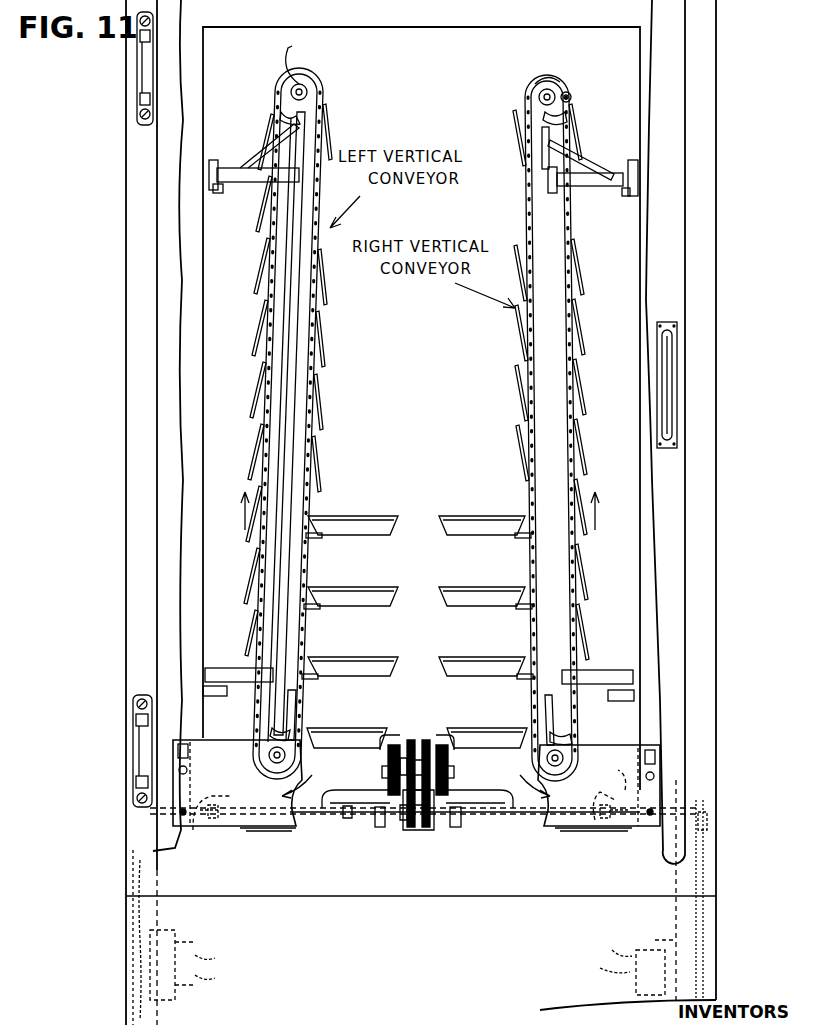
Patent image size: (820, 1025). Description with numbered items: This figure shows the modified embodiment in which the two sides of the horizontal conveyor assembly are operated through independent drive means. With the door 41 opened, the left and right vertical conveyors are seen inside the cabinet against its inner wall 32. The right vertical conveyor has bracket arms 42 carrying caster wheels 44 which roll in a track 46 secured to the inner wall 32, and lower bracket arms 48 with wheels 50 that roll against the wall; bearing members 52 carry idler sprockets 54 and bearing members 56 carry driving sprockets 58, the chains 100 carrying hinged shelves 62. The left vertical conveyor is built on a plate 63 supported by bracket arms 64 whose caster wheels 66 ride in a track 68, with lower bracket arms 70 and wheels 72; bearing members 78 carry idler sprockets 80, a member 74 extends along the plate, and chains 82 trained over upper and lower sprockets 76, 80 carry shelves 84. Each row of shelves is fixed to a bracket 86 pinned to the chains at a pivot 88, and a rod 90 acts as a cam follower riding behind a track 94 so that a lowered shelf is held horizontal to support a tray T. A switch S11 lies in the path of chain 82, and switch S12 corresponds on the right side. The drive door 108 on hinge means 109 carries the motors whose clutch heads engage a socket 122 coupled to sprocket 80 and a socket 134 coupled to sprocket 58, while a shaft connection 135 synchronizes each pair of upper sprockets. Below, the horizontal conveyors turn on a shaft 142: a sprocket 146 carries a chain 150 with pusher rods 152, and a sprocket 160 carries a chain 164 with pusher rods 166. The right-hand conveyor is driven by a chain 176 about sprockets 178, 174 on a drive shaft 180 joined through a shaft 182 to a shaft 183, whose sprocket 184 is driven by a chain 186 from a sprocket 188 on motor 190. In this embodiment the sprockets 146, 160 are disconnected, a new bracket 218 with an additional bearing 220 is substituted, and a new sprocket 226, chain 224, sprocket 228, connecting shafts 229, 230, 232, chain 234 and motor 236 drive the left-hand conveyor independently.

The inner wall 32 is at (436, 29).
The door 41 is at (160, 168).
The bracket arms 42 is at (626, 172).
The caster wheels 44 is at (634, 162).
The track 46 is at (632, 196).
The bracket arms 48 is at (594, 668).
The wheels 50 is at (603, 701).
The bearing members 52 is at (545, 125).
The idler sprockets 54 is at (576, 122).
The bearing members 56 is at (546, 712).
The driving sprockets 58 is at (572, 742).
The shelves 62 is at (528, 346).
The plate 63 is at (286, 348).
The bracket arms 64 is at (232, 167).
The caster wheels 66 is at (214, 160).
The track 68 is at (219, 193).
The bracket arms 70 is at (240, 668).
The wheels 72 is at (236, 697).
The left conveyor post 74 is at (306, 132).
The upper sprockets 76 is at (282, 116).
The bearing members 78 is at (296, 712).
The idler sprockets 80 is at (270, 734).
The chains 82 is at (268, 296).
The shelves 84 is at (322, 338).
The bracket 86 is at (268, 264).
The pivot 88 is at (260, 620).
The rod 90 is at (261, 604).
The track 94 is at (297, 420).
The right conveyor chain 100 is at (540, 445).
The door 108 is at (615, 830).
The hinge means 109 is at (258, 832).
The socket 122 is at (268, 755).
The socket 134 is at (564, 757).
The shaft connection 135 is at (303, 90).
The shaft 142 is at (382, 772).
The sprocket 146 is at (386, 790).
The chain 150 is at (396, 744).
The pusher rods 152 is at (358, 732).
The sprocket 160 is at (450, 790).
The chain 164 is at (446, 732).
The pusher rods 166 is at (482, 736).
The sprocket 174 is at (413, 828).
The chain 176 is at (428, 828).
The sprocket 178 is at (430, 740).
The drive shaft 180 is at (444, 822).
The shaft 182 is at (590, 796).
The shaft 183 is at (617, 777).
The sprocket 184 is at (706, 803).
The chain 186 is at (704, 862).
The sprocket 188 is at (704, 952).
The motor 190 is at (636, 982).
The bracket 218 is at (404, 828).
The bearing 220 is at (376, 820).
The chain 224 is at (418, 830).
The sprocket 226 is at (404, 738).
The sprocket 228 is at (410, 830).
The connecting shaft 229 is at (382, 822).
The connecting shaft 230 is at (250, 826).
The connecting shaft 232 is at (220, 788).
The chain 234 is at (134, 881).
The motor 236 is at (205, 985).
The tray T is at (472, 518).
The switch S11 is at (308, 644).
The switch S12 is at (530, 644).